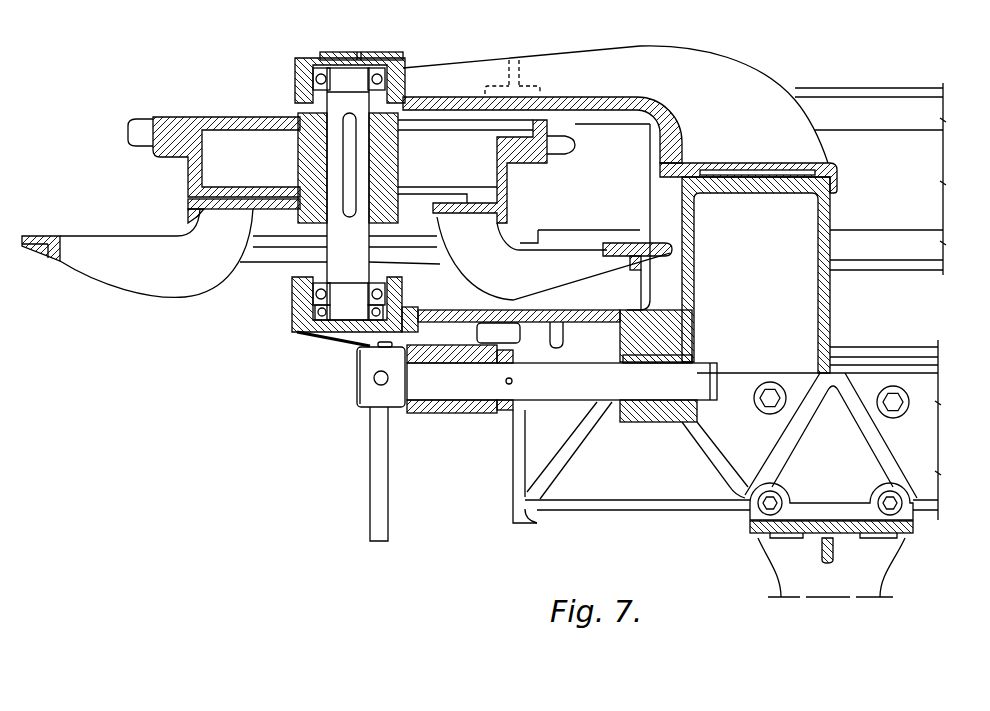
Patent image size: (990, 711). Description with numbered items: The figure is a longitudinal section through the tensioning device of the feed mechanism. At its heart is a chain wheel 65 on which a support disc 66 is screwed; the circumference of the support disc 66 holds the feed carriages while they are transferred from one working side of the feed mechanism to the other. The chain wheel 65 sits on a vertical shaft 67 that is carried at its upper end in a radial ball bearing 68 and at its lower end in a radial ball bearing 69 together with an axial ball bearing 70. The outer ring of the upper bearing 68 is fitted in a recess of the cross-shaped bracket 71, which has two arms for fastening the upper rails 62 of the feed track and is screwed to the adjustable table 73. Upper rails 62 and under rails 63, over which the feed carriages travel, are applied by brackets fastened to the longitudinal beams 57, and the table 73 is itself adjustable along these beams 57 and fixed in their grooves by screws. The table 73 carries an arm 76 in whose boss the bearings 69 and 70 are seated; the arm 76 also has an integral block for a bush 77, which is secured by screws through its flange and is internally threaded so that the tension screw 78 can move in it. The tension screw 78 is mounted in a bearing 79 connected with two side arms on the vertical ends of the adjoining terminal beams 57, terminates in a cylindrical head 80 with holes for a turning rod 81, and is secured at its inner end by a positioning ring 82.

The longitudinal beam 57 is at (885, 353).
The upper rail 62 is at (893, 122).
The under rail 63 is at (883, 247).
The chain wheel 65 is at (156, 117).
The support disc 66 is at (98, 238).
The vertical shaft 67 is at (338, 263).
The radial ball bearing 68 is at (293, 82).
The radial ball bearing 69 is at (312, 300).
The axial ball bearing 70 is at (297, 337).
The cross-shaped bracket 71 is at (566, 66).
The adjustable table 73 is at (686, 278).
The arm 76 is at (437, 314).
The bush 77 is at (693, 419).
The tension screw 78 is at (718, 376).
The bearing 79 is at (438, 413).
The cylindrical head 80 is at (365, 397).
The turning rod 81 is at (378, 433).
The positioning ring 82 is at (504, 411).